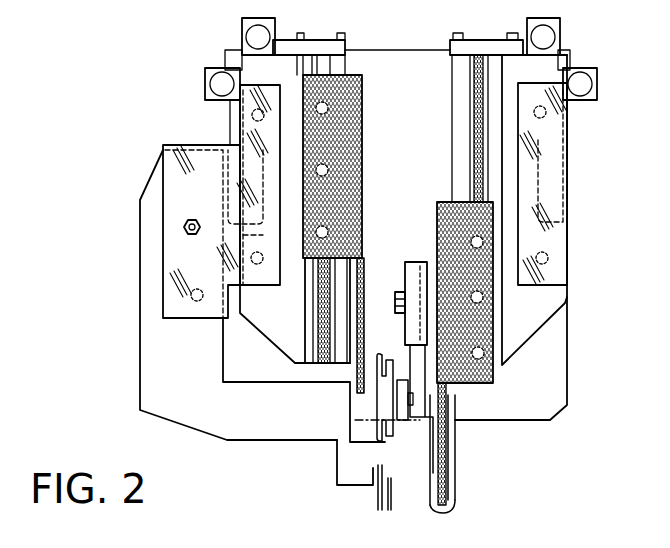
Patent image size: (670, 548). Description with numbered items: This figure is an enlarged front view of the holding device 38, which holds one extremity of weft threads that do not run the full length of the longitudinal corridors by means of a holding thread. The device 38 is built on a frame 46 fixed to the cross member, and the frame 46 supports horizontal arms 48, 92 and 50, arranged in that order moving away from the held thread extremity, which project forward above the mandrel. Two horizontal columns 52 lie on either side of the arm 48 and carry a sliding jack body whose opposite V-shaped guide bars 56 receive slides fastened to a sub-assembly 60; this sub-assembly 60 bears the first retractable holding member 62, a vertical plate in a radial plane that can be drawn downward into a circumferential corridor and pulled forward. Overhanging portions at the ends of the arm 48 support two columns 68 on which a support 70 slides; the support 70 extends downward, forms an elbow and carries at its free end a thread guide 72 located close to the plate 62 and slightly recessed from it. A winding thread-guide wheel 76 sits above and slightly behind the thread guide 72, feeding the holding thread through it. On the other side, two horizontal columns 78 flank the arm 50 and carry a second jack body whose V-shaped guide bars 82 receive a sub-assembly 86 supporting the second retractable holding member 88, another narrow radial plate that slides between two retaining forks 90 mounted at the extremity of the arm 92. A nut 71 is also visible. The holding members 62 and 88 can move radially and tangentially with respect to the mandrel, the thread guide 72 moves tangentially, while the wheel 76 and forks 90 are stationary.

The holding device 38 is at (151, 102).
The frame 46 is at (396, 70).
The horizontal arm 48 is at (227, 147).
The horizontal arm 50 is at (563, 142).
The horizontal columns 52 is at (250, 108).
The V-shaped guide bars 56 is at (323, 337).
The sub-assembly 60 is at (345, 138).
The first retractable holding member 62 is at (363, 292).
The columns 68 is at (160, 155).
The support 70 is at (165, 362).
The nut 71 is at (184, 226).
The thread guide 72 is at (348, 494).
The winding thread-guide wheel 76 is at (380, 430).
The horizontal columns 78 is at (540, 106).
The V-shaped guide bars 82 is at (480, 80).
The sub-assembly 86 is at (440, 218).
The second retractable holding member 88 is at (448, 476).
The retaining forks 90 is at (456, 505).
The horizontal arm 92 is at (408, 302).